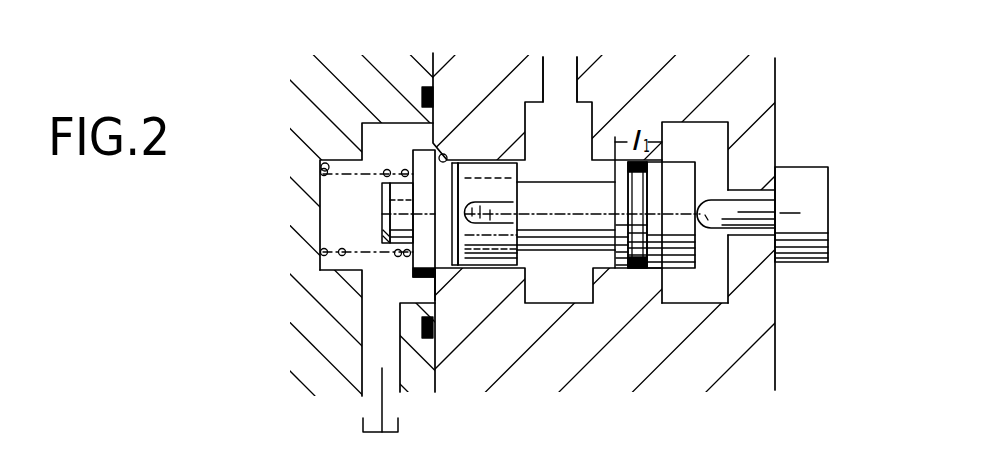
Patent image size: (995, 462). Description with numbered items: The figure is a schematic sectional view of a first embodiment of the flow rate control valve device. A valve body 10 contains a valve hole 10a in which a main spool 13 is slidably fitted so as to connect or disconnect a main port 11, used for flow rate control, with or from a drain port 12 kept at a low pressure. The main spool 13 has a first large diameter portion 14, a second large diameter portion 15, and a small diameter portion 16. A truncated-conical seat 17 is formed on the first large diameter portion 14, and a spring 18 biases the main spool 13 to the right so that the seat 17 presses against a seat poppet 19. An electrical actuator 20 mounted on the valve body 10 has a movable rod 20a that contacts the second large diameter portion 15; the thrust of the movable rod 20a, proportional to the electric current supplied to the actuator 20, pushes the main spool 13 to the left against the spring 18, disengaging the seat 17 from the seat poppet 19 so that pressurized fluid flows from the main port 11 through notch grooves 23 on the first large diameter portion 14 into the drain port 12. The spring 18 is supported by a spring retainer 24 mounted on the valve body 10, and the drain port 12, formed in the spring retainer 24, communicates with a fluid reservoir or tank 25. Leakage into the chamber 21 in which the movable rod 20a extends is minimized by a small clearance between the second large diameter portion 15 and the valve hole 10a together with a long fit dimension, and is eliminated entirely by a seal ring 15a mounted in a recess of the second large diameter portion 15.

The valve body 10 is at (771, 73).
The valve hole 10a is at (480, 263).
The main port 11 is at (575, 83).
The drain port 12 is at (357, 344).
The main spool 13 is at (570, 180).
The first large diameter portion 14 is at (493, 167).
The second large diameter portion 15 is at (682, 167).
The seal ring 15a is at (637, 268).
The small diameter portion 16 is at (553, 233).
The truncated-conical seat 17 is at (433, 177).
The spring 18 is at (325, 163).
The seat poppet 19 is at (443, 152).
The electrical actuator 20 is at (800, 172).
The movable rod 20a is at (756, 218).
The chamber 21 is at (683, 298).
The notch grooves 23 is at (515, 216).
The spring retainer 24 is at (336, 283).
The fluid reservoir or tank 25 is at (363, 423).